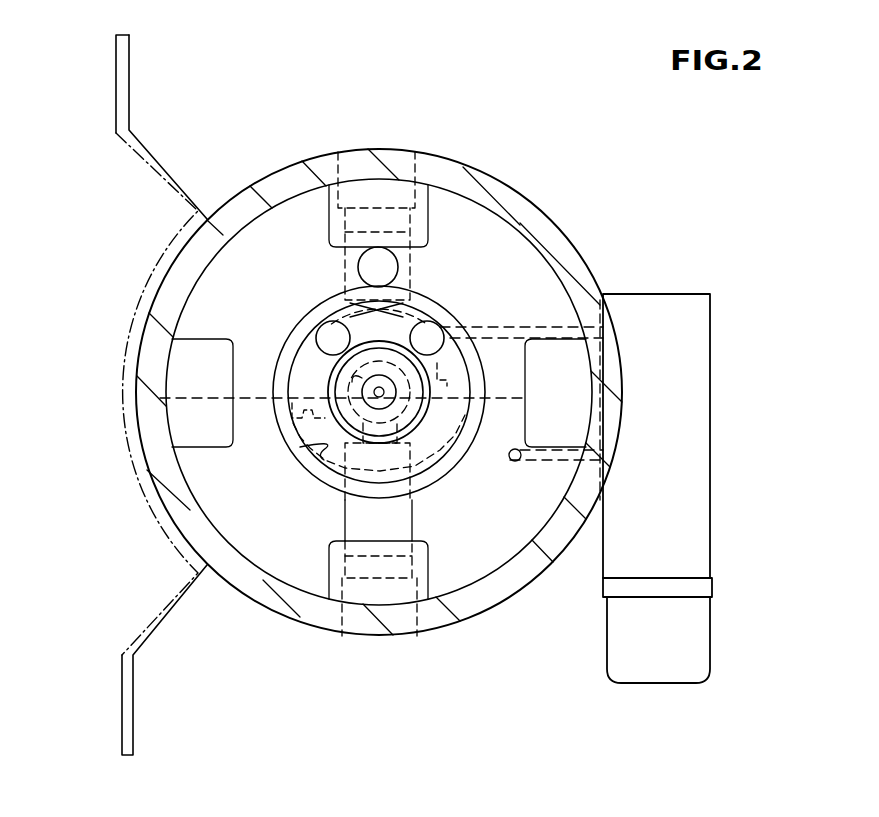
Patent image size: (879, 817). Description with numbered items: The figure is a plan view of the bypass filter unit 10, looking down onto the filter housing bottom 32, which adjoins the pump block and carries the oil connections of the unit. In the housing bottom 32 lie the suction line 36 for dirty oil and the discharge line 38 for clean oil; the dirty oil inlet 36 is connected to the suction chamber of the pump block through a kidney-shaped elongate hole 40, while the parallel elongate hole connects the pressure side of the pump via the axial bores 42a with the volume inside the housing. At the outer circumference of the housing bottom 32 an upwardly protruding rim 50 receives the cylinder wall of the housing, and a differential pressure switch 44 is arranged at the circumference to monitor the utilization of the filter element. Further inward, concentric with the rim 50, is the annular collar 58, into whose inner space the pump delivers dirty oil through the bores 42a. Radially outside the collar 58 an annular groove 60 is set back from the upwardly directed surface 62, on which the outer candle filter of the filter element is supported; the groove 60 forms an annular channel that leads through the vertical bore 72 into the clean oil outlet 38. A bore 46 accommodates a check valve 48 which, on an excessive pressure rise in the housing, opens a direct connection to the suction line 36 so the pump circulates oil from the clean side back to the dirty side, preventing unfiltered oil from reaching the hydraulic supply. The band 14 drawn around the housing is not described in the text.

The bypass filter unit 10 is at (218, 203).
The clamp band 14 is at (143, 470).
The filter housing bottom 32 is at (568, 263).
The suction line 36 is at (347, 603).
The discharge line 38 is at (348, 160).
The kidney-shaped elongate hole 40 is at (306, 455).
The bores 42a is at (316, 337).
The differential pressure switch 44 is at (712, 300).
The bore 46 is at (157, 400).
The check valve 48 is at (402, 399).
The rim 50 is at (447, 613).
The annular collar 58 is at (300, 447).
The annular groove 60 is at (257, 295).
The upwardly directed surface 62 is at (197, 323).
The vertical bore 72 is at (384, 265).